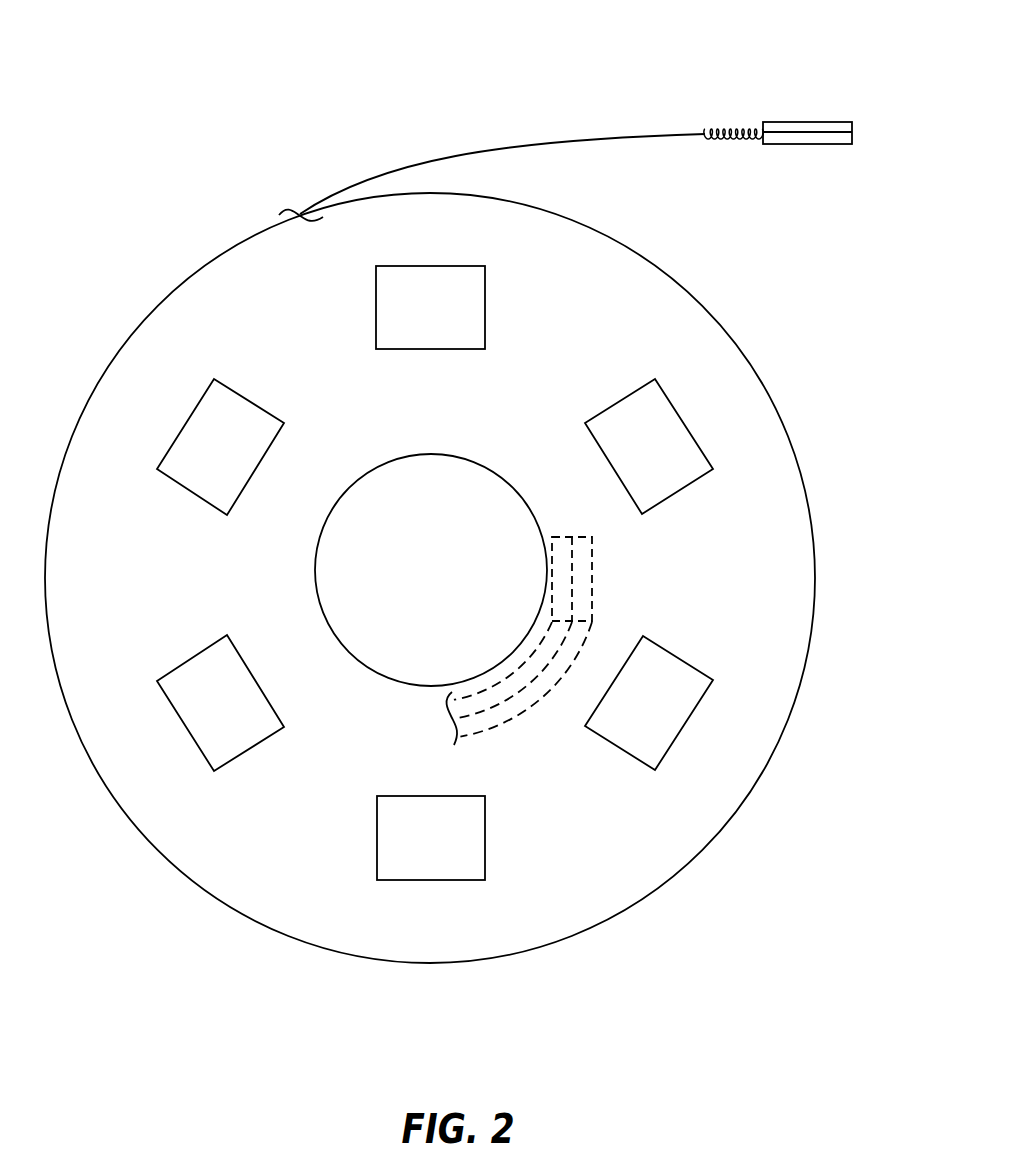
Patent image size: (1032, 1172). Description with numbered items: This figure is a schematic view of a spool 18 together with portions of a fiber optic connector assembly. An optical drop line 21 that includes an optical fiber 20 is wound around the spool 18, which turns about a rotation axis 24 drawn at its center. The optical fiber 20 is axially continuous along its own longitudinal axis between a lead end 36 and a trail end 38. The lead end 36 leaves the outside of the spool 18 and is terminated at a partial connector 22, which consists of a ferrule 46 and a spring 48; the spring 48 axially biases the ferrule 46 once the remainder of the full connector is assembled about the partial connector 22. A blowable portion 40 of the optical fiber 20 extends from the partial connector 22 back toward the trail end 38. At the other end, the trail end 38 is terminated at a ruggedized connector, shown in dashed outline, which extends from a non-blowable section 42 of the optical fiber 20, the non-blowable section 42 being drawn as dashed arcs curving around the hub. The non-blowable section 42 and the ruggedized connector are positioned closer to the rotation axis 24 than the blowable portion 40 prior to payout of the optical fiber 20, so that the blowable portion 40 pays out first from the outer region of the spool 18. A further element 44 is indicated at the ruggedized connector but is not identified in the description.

The spool 18 is at (152, 313).
The optical fiber 20 is at (420, 162).
The optical drop line 21 is at (498, 150).
The partial connector 22 is at (808, 82).
The rotation axis 24 is at (430, 578).
The lead end 36 is at (853, 133).
The trail end 38 is at (572, 536).
The blowable portion 40 is at (570, 143).
The non-blowable section 42 is at (542, 689).
The slot 44 is at (592, 558).
The ferrule 46 is at (812, 122).
The spring 48 is at (732, 125).